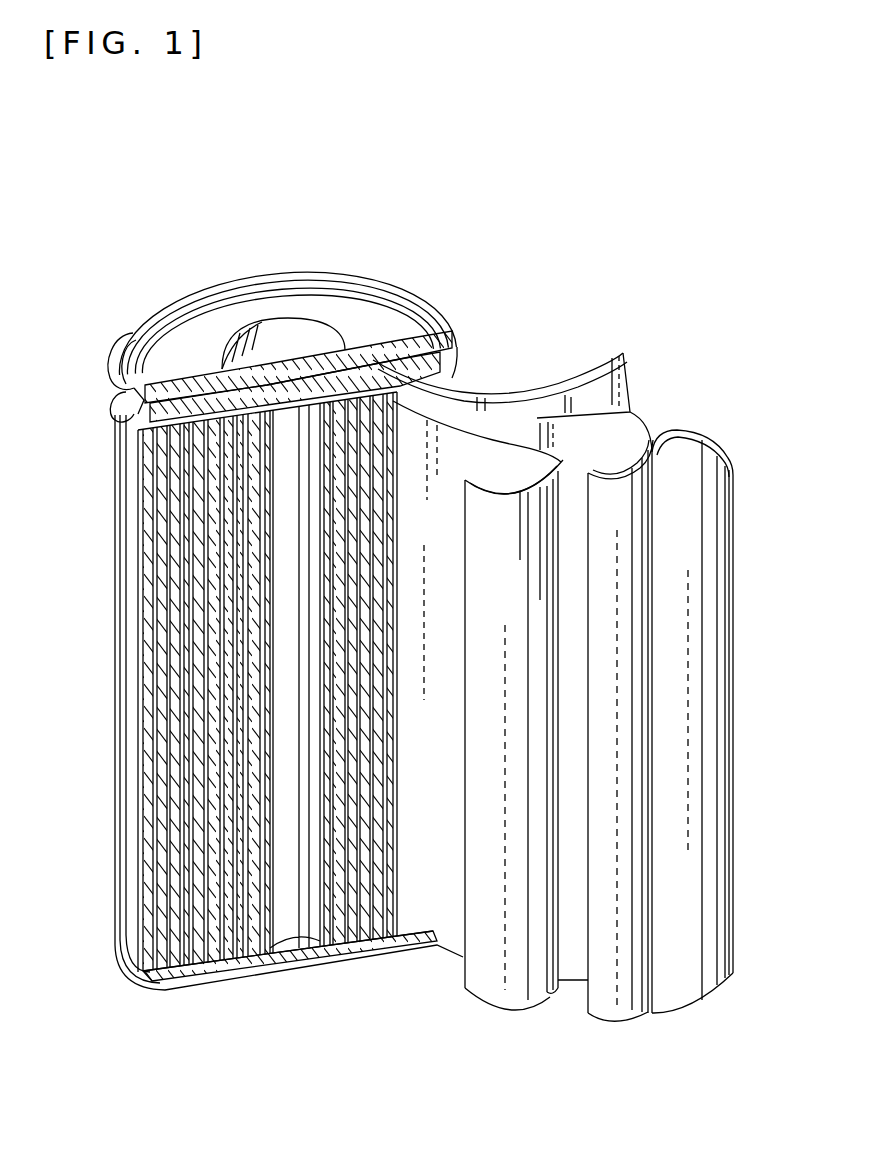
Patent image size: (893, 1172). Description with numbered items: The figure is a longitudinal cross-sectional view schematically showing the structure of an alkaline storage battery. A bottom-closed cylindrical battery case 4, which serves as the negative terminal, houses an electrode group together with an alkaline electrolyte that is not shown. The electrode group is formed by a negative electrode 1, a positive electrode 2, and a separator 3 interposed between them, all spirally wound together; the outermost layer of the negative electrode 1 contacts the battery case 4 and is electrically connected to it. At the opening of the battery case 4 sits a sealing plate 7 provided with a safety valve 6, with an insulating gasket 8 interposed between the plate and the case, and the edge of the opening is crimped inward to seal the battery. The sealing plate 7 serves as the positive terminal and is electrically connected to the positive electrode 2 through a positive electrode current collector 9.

The negative electrode 1 is at (718, 625).
The positive electrode 2 is at (540, 876).
The separator 3 is at (640, 730).
The battery case 4 is at (123, 733).
The safety valve 6 is at (263, 367).
The sealing plate 7 is at (398, 333).
The insulating gasket 8 is at (120, 357).
The positive electrode current collector 9 is at (130, 413).